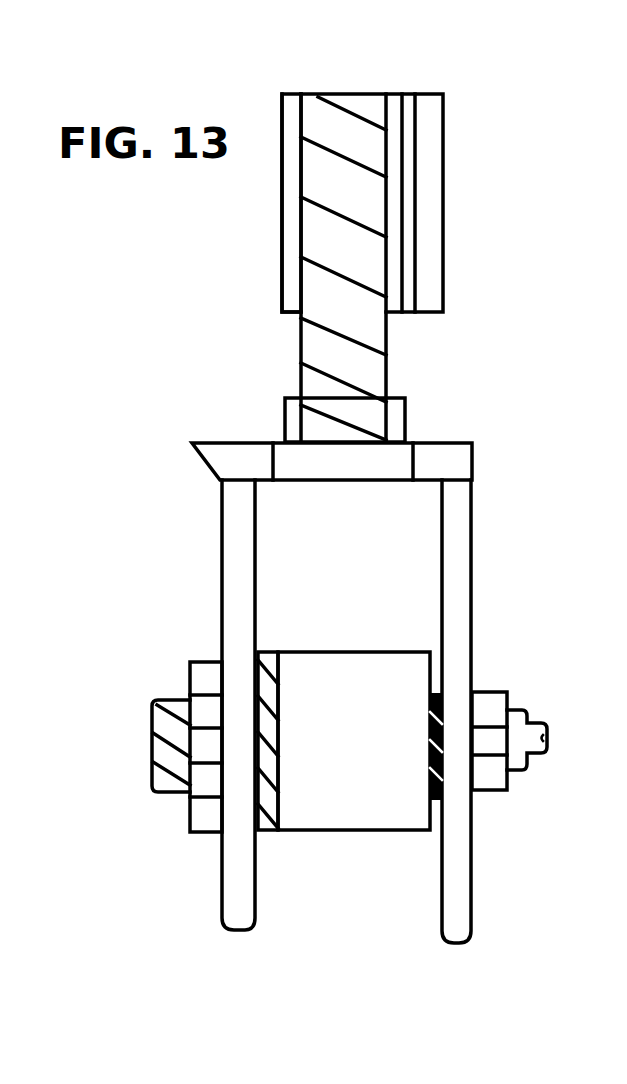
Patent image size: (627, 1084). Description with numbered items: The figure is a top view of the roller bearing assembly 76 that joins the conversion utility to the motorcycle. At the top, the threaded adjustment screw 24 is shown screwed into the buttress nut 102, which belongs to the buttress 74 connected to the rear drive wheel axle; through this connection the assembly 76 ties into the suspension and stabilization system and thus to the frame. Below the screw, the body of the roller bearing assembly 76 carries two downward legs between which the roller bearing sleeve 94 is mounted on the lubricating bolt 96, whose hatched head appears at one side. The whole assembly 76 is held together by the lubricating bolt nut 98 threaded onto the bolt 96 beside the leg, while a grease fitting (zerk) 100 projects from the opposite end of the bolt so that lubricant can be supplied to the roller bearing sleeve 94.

The buttress 74 is at (430, 182).
The buttress nut 102 is at (290, 256).
The adjustment screw 24 is at (375, 373).
The roller bearing assembly 76 is at (230, 452).
The roller bearing sleeve 94 is at (345, 815).
The lubricating bolt 96 is at (152, 742).
The lubricating bolt nut 98 is at (190, 818).
The grease fitting (zerk) 100 is at (538, 750).